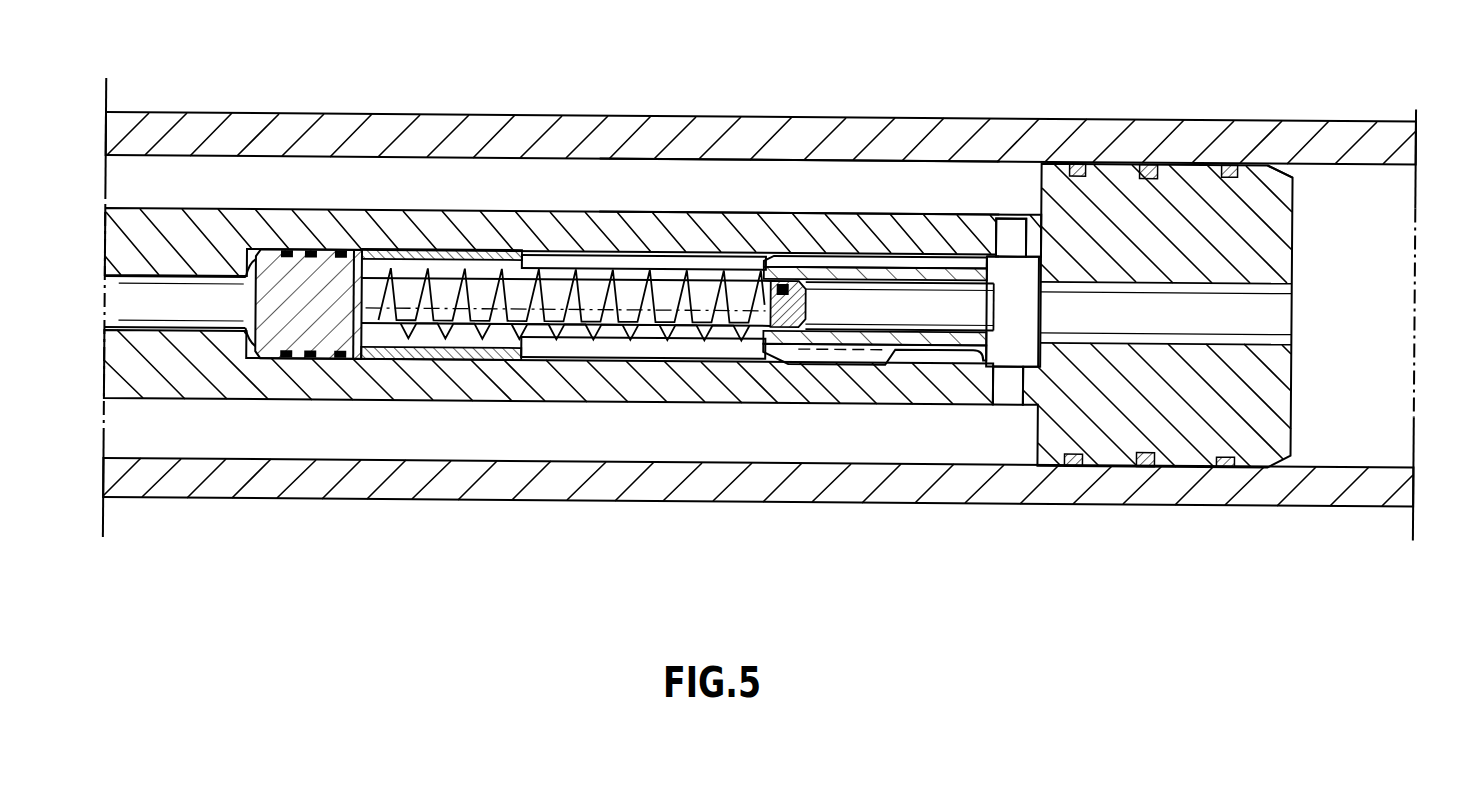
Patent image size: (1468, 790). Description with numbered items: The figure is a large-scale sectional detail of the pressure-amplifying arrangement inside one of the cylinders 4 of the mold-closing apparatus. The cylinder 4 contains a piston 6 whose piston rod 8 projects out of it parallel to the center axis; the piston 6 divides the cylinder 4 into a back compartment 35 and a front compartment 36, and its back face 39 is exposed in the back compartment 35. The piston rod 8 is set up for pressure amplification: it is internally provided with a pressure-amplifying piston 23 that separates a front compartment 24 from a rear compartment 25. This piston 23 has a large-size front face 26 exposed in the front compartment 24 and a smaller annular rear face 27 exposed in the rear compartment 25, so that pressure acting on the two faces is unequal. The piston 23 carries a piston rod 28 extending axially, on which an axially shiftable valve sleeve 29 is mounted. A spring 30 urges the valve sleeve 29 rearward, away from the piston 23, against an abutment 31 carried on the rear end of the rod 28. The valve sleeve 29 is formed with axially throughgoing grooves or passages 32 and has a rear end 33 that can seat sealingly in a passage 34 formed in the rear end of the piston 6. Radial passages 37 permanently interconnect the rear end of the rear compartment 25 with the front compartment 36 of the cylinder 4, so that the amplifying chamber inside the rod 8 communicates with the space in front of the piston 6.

The cylinder 4 is at (470, 126).
The piston 6 is at (1268, 433).
The piston rod 8 is at (193, 222).
The pressure-amplifying piston 23 is at (333, 247).
The front compartment 24 is at (253, 278).
The rear compartment 25 is at (582, 258).
The front face 26 is at (247, 312).
The annular rear face 27 is at (523, 357).
The piston rod 28 is at (668, 328).
The valve sleeve 29 is at (802, 340).
The spring 30 is at (578, 327).
The abutment 31 is at (993, 343).
The passages 32 is at (823, 260).
The rear end 33 is at (988, 268).
The passage 34 is at (1271, 310).
The back compartment 35 is at (1372, 375).
The front compartment 36 is at (742, 188).
The radial passages 37 is at (1012, 237).
The back face 39 is at (1296, 207).